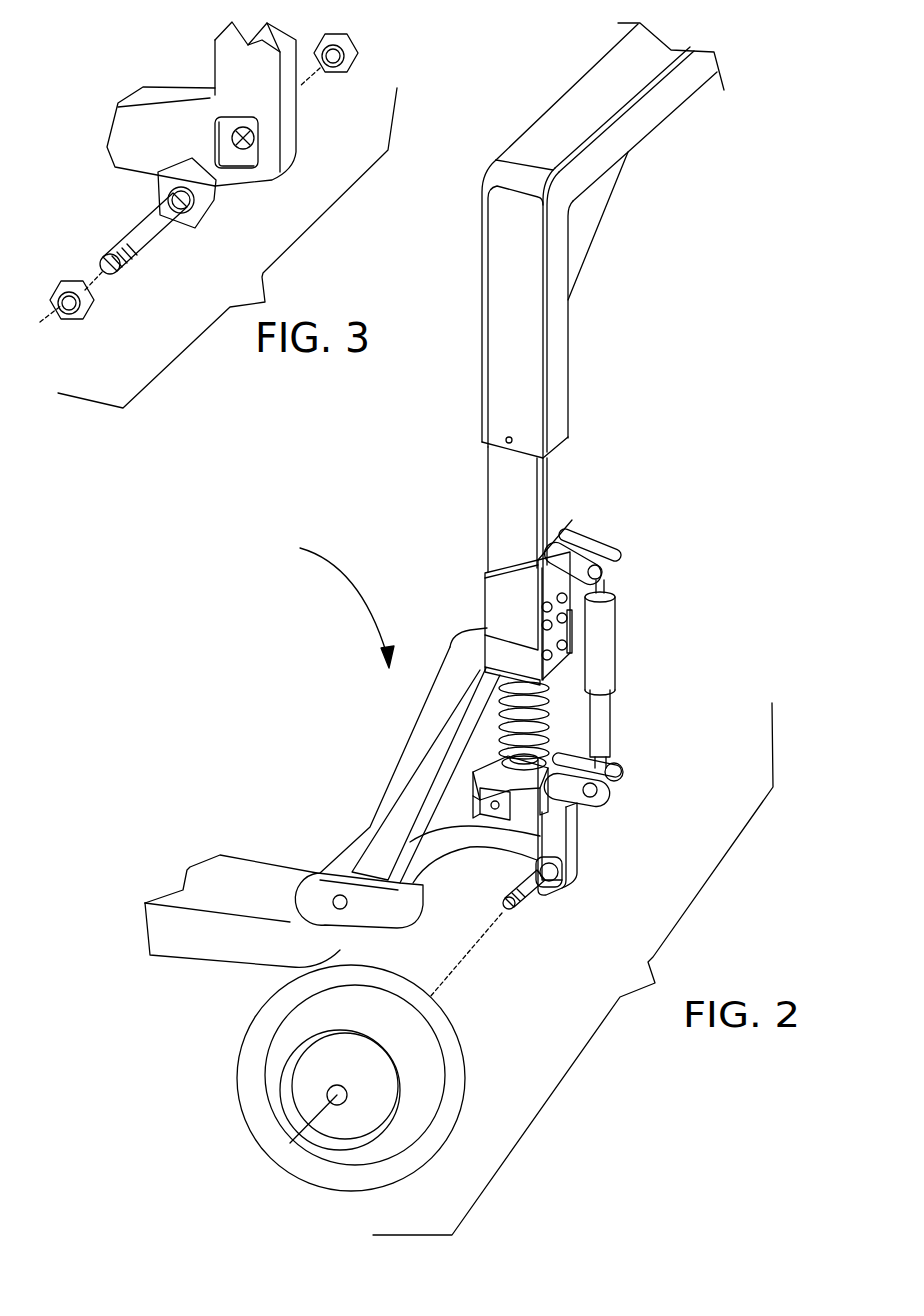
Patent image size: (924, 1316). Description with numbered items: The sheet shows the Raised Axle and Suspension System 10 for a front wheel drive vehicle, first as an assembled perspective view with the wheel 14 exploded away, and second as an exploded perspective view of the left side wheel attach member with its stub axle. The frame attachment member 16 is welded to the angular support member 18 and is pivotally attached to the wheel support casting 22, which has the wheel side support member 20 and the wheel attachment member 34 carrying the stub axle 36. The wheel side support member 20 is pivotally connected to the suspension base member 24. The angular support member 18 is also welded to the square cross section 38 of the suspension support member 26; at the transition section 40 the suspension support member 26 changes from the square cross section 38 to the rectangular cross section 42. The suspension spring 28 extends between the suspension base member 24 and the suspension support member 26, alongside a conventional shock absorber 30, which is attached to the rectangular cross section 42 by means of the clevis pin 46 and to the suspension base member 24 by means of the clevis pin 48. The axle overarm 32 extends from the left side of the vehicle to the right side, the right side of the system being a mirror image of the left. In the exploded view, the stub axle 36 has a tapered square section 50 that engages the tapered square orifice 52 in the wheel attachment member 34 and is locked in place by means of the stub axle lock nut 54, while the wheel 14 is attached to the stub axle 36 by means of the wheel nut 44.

In FIG. 2, the Raised Axle and Suspension System 10 is at (334, 597).
In FIG. 2, the wheel 14 is at (267, 1107).
In FIG. 2, the frame attachment member 16 is at (228, 882).
In FIG. 2, the angular support member 18 is at (415, 765).
In FIG. 2, the wheel side support member 20 is at (455, 848).
In FIG. 2, the wheel support casting 22 is at (440, 878).
In FIG. 2, the suspension base member 24 is at (576, 808).
In FIG. 2, the suspension support member 26 is at (565, 505).
In FIG. 2, the suspension spring 28 is at (550, 727).
In FIG. 2, the shock absorber 30 is at (600, 640).
In FIG. 2, the axle overarm 32 is at (607, 80).
In FIG. 3, the wheel attachment member 34 is at (243, 72).
In FIG. 2, the wheel attachment member 34 is at (558, 833).
In FIG. 3, the stub axle 36 is at (143, 225).
In FIG. 2, the stub axle 36 is at (540, 897).
In FIG. 2, the square cross section 38 is at (508, 593).
In FIG. 2, the transition section 40 is at (505, 575).
In FIG. 2, the rectangular cross section 42 is at (515, 495).
In FIG. 3, the wheel nut 44 is at (62, 280).
In FIG. 2, the clevis pin 46 is at (625, 560).
In FIG. 2, the clevis pin 48 is at (615, 792).
In FIG. 3, the tapered square section 50 is at (207, 215).
In FIG. 3, the tapered square orifice 52 is at (277, 183).
In FIG. 3, the stub axle lock nut 54 is at (347, 37).